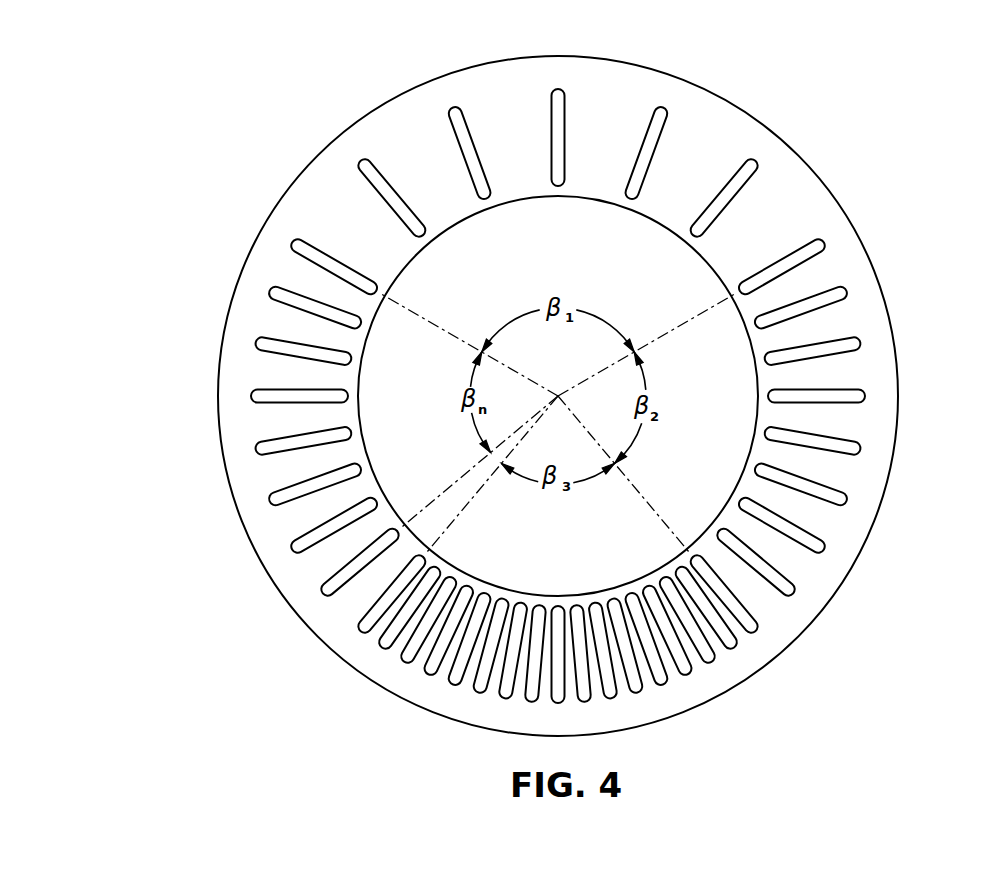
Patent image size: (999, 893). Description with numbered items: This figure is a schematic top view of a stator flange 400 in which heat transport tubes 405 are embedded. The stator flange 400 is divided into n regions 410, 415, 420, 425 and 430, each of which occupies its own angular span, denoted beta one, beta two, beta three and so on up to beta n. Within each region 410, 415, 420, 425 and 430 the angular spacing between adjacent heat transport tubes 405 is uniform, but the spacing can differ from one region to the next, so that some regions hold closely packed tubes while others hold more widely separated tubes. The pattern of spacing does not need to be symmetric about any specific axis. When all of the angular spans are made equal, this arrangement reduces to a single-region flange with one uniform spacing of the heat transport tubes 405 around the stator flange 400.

The stator flange 400 is at (233, 130).
The heat transport tubes 405 is at (660, 110).
The region 410 is at (530, 215).
The region 415 is at (715, 415).
The region 420 is at (580, 575).
The region 425 is at (433, 515).
The region 430 is at (370, 370).